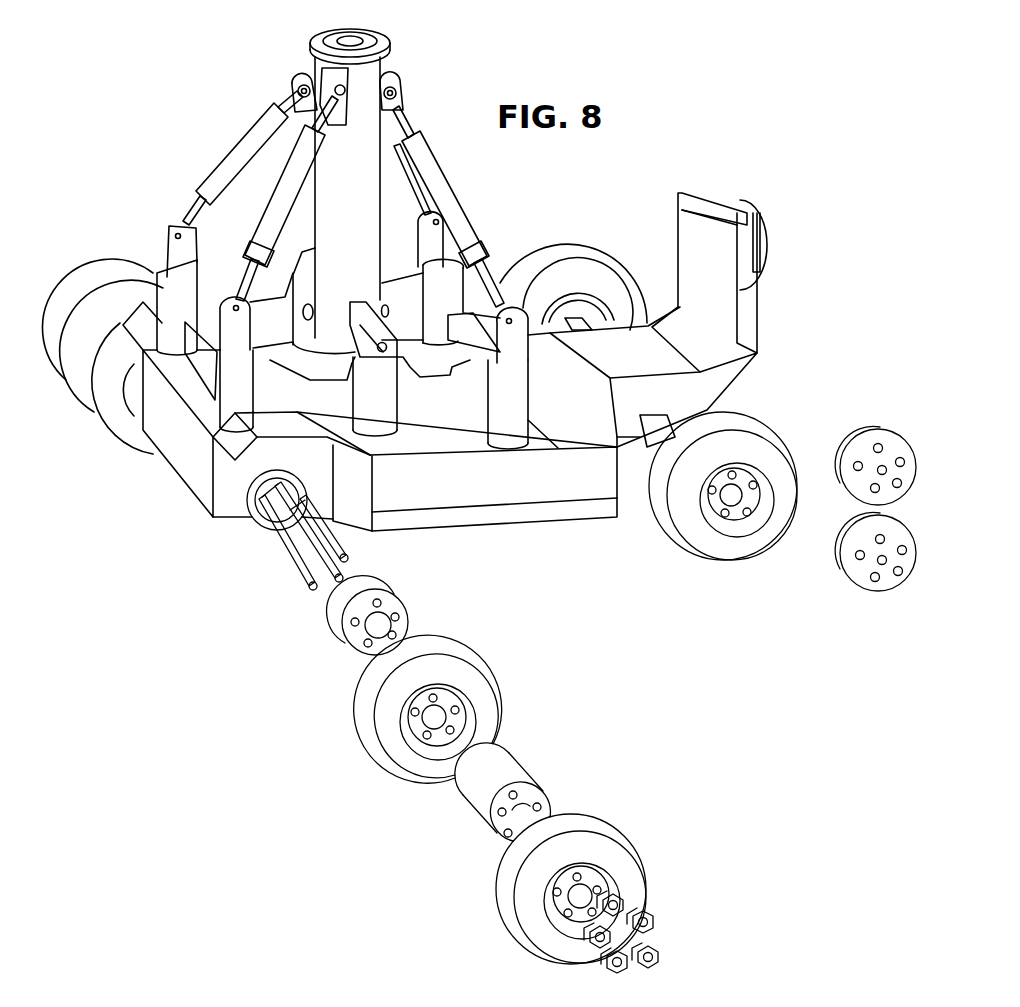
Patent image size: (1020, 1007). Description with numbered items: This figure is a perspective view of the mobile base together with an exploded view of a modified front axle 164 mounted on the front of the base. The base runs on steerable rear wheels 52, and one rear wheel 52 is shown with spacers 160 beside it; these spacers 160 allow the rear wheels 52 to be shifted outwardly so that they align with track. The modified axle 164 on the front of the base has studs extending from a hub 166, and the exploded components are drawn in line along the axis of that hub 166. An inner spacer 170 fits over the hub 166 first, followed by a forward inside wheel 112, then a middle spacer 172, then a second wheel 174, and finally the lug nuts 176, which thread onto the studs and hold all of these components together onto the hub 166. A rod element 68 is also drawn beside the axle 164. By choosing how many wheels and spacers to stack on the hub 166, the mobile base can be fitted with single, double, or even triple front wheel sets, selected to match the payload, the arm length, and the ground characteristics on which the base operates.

The rear wheels 52 is at (770, 437).
The spacer 160 is at (853, 570).
The hub 166 is at (245, 503).
The modified axle 164 is at (240, 530).
The spindle rod 68 is at (340, 537).
The inner spacer 170 is at (405, 600).
The forward inside wheel 112 is at (502, 693).
The middle spacer 172 is at (510, 755).
The second wheel 174 is at (597, 830).
The lug nuts 176 is at (650, 923).